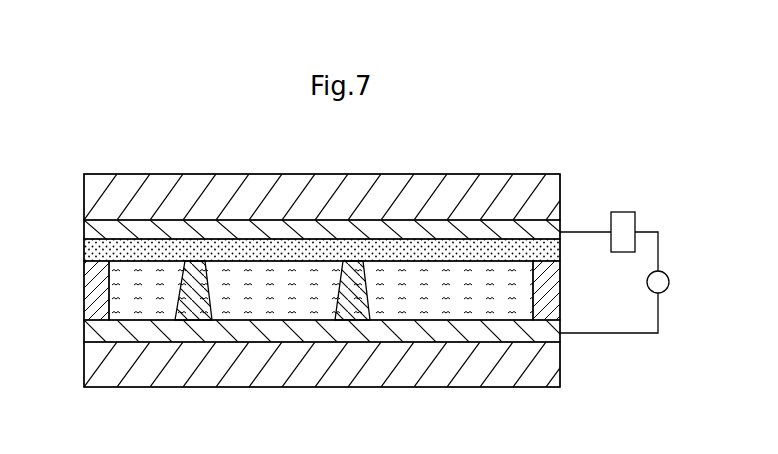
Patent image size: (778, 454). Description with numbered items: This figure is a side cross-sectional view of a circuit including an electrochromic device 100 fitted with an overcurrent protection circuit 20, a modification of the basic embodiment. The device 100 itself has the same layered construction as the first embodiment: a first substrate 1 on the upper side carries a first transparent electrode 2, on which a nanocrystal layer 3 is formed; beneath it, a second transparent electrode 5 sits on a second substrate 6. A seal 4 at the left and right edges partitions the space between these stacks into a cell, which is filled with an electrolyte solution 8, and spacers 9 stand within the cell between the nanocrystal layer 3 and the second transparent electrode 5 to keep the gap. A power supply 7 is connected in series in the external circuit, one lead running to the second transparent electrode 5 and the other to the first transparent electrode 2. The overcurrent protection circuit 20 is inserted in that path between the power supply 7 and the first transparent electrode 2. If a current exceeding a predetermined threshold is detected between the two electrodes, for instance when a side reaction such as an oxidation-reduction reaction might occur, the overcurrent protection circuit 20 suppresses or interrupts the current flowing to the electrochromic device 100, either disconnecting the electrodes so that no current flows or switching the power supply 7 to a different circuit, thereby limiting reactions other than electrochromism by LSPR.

The electrochromic device 100 is at (528, 146).
The first substrate 1 is at (563, 198).
The first transparent electrode 2 is at (84, 222).
The nanocrystal layer 3 is at (563, 249).
The seal 4 is at (86, 288).
The second transparent electrode 5 is at (86, 331).
The second substrate 6 is at (563, 370).
The power supply 7 is at (669, 277).
The electrolyte solution 8 is at (457, 293).
The spacer 9 is at (194, 308).
The overcurrent protection circuit 20 is at (637, 216).